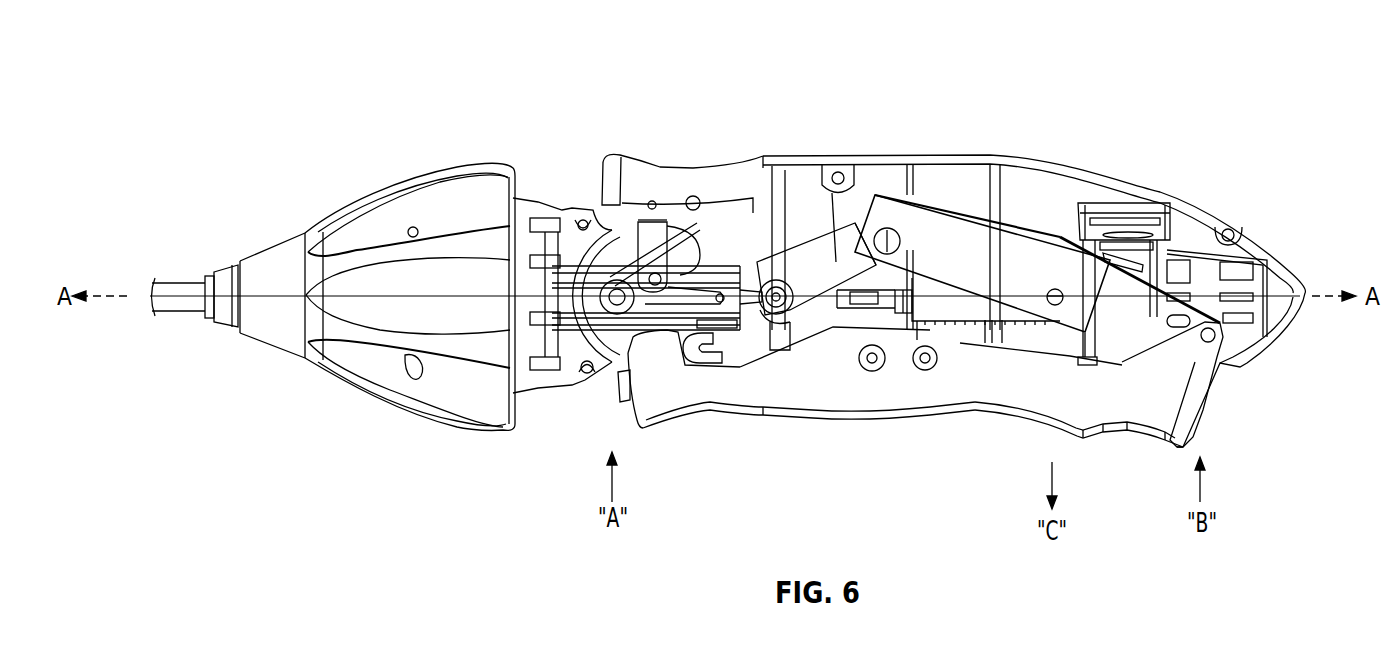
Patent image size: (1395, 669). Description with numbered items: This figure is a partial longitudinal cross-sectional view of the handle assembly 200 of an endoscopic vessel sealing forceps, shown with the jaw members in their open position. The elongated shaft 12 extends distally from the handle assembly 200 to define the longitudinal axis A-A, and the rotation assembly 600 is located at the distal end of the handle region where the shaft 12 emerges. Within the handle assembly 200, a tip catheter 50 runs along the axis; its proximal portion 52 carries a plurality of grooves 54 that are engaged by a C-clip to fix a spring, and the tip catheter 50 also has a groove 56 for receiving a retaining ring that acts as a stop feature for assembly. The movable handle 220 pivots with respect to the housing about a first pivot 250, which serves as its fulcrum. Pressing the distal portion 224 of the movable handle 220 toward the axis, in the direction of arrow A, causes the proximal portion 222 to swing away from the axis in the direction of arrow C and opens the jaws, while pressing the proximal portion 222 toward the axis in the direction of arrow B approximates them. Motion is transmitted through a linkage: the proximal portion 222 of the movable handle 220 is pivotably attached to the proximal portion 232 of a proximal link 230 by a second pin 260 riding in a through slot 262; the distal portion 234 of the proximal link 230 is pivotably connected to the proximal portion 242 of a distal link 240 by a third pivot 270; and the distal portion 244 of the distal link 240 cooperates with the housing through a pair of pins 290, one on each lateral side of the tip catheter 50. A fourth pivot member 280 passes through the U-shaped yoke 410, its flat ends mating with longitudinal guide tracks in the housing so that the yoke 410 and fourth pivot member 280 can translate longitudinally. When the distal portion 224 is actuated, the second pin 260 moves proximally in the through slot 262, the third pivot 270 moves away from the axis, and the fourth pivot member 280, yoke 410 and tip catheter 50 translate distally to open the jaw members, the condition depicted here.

The elongated shaft 12 is at (170, 283).
The tip catheter 50 is at (835, 312).
The proximal portion of tip catheter 52 is at (886, 304).
The grooves 54 is at (927, 372).
The groove 56 is at (868, 372).
The handle assembly 200 is at (1122, 36).
The movable handle 220 is at (851, 388).
The proximal portion of movable handle 222 is at (1139, 465).
The distal portion of movable handle 224 is at (710, 432).
The proximal link 230 is at (993, 250).
The proximal portion of proximal link 232 is at (1135, 290).
The distal portion of proximal link 234 is at (952, 236).
The distal link 240 is at (836, 262).
The proximal portion of distal link 242 is at (858, 230).
The distal portion of distal link 244 is at (747, 208).
The first pivot 250 is at (938, 372).
The second pin 260 is at (1212, 328).
The through slot 262 is at (1178, 316).
The third pivot 270 is at (889, 228).
The fourth pivot member 280 is at (1057, 289).
The pins 290 is at (782, 270).
The yoke 410 is at (977, 316).
The rotation assembly 600 is at (396, 152).